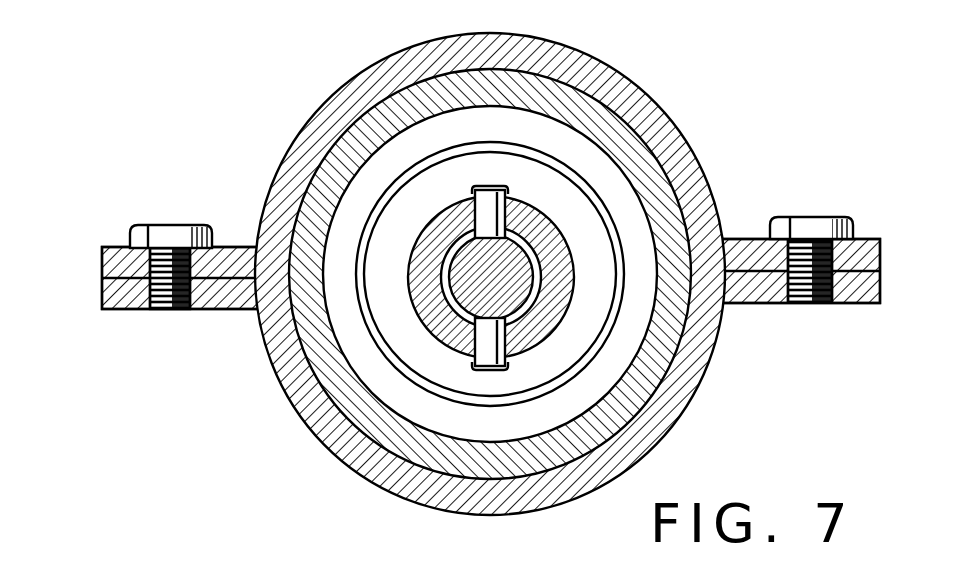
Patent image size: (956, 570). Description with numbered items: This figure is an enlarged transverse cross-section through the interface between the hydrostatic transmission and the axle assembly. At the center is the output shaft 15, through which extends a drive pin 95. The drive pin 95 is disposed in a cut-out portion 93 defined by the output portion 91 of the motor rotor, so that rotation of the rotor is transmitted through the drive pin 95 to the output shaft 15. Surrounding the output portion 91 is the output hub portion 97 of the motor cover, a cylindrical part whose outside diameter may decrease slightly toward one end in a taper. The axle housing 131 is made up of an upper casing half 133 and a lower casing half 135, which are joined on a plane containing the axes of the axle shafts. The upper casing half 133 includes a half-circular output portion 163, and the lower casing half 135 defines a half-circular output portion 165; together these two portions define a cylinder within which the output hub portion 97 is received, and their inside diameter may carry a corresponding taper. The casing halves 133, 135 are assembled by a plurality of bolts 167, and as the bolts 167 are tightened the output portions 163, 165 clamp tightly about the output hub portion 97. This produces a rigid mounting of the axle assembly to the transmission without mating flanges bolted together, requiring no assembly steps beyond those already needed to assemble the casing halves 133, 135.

The output shaft 15 is at (512, 318).
The output portion 91 is at (443, 374).
The cut-out portion 93 is at (428, 297).
The drive pin 95 is at (497, 214).
The output hub portion 97 is at (380, 118).
The axle housing 131 is at (84, 268).
The upper casing half 133 is at (498, 262).
The lower casing half 135 is at (323, 457).
The half-circular output portion 163 is at (531, 54).
The half-circular output portion 165 is at (670, 431).
The bolts 167 is at (166, 240).